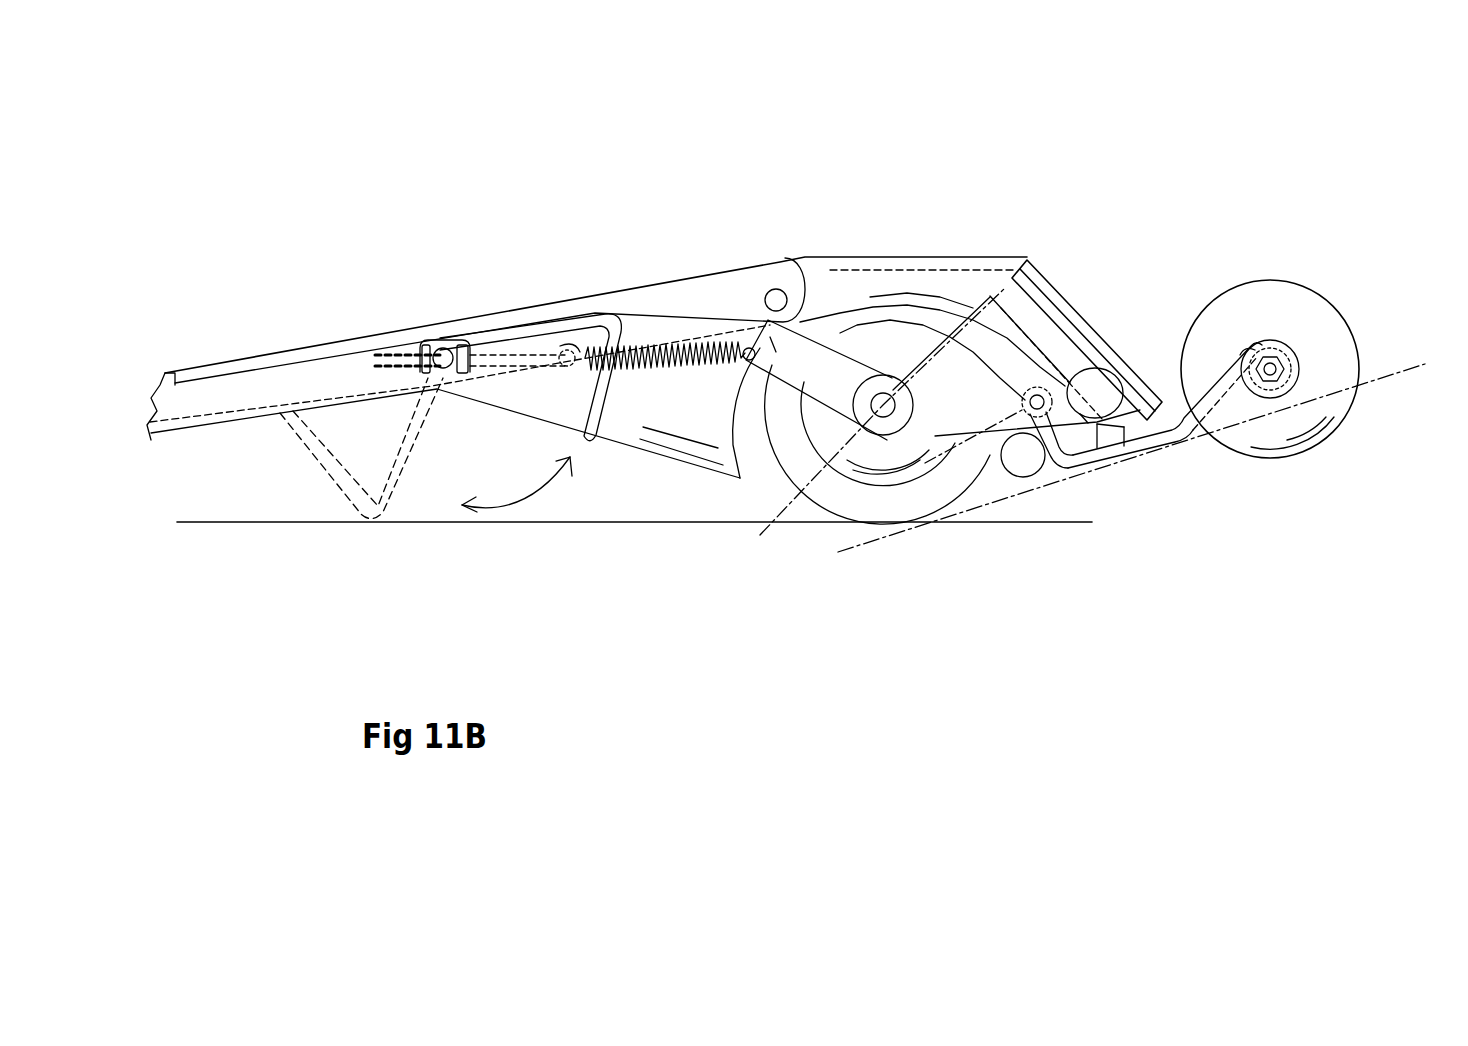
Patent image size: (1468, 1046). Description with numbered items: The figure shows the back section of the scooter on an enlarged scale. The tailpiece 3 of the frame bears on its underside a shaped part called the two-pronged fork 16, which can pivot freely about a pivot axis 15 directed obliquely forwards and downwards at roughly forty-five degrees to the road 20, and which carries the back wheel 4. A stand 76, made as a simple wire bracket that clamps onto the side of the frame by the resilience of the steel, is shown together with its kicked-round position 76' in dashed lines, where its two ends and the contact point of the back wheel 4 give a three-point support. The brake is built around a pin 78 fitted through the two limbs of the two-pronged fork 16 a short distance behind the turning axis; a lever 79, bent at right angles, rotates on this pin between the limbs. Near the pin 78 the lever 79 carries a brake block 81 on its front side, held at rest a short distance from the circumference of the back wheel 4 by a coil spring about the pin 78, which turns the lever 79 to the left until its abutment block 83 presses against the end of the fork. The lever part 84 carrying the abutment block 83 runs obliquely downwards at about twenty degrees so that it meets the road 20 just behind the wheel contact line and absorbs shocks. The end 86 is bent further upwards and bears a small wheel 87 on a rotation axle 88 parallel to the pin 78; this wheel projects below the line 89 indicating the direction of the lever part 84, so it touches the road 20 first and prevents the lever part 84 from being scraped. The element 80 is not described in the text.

The tailpiece 3 is at (1028, 260).
The back wheel 4 is at (797, 477).
The pivot axis 15 is at (1117, 312).
The two-pronged fork 16 is at (945, 432).
The road 20 is at (232, 524).
The stand 76 is at (530, 464).
The stand position 76' is at (361, 515).
The pin 78 is at (1072, 458).
The lever 79 is at (1135, 450).
The pivot 80 is at (1046, 462).
The brake block 81 is at (1018, 476).
The abutment block 83 is at (1178, 441).
The lever part 84 is at (1108, 462).
The end 86 is at (1233, 392).
The small wheel 87 is at (1350, 338).
The rotation axle 88 is at (1272, 367).
The line 89 is at (1377, 380).